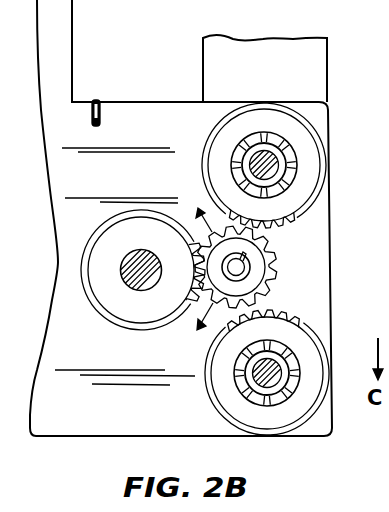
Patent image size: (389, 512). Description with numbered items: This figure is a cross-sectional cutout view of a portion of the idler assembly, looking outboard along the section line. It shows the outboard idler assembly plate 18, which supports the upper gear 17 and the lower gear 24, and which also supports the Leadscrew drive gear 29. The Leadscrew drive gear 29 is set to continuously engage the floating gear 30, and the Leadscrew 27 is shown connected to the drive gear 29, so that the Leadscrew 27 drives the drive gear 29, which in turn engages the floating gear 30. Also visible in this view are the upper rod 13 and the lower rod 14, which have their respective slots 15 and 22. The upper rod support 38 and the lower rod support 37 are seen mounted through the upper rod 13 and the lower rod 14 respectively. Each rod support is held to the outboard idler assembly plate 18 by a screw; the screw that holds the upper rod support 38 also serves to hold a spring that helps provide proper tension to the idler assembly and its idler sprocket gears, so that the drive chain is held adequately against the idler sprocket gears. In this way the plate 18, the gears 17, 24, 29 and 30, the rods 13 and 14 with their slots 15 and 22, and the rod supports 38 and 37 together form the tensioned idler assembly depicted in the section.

The upper rod 13 is at (280, 149).
The lower rod 14 is at (245, 378).
The slot 15 is at (297, 163).
The upper gear 17 is at (203, 130).
The outboard idler assembly plate 18 is at (80, 428).
The slot 22 is at (299, 370).
The lower gear 24 is at (278, 316).
The Leadscrew 27 is at (138, 277).
The Leadscrew drive gear 29 is at (108, 216).
The floating gear 30 is at (266, 256).
The lower rod support 37 is at (270, 388).
The upper rod support 38 is at (270, 152).